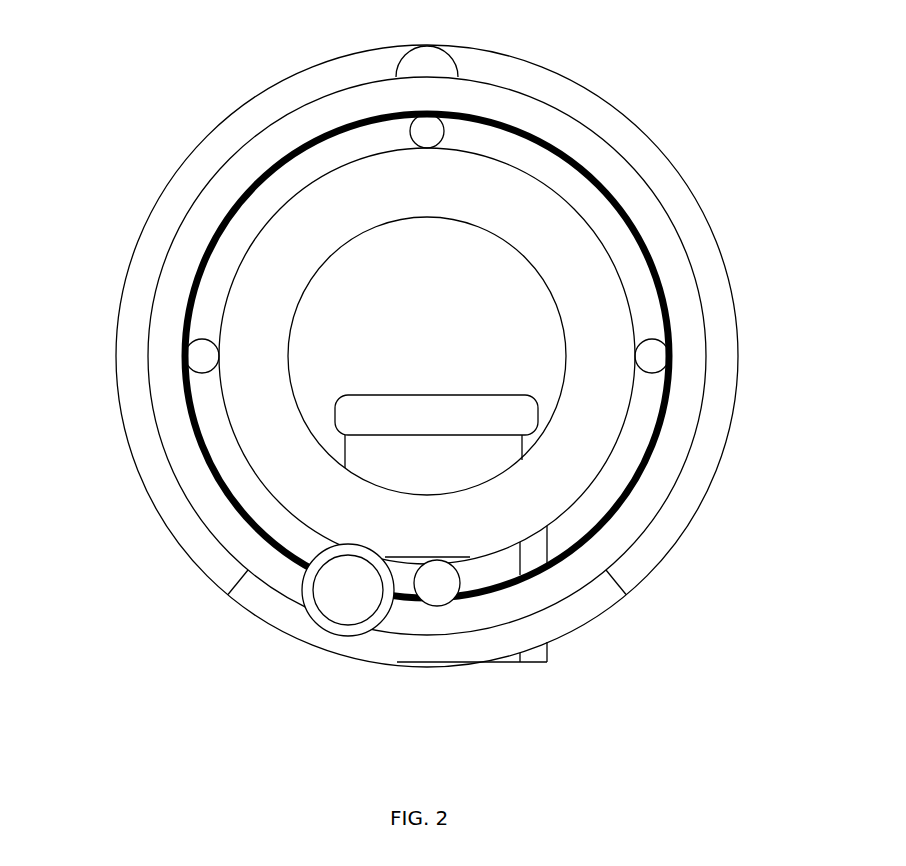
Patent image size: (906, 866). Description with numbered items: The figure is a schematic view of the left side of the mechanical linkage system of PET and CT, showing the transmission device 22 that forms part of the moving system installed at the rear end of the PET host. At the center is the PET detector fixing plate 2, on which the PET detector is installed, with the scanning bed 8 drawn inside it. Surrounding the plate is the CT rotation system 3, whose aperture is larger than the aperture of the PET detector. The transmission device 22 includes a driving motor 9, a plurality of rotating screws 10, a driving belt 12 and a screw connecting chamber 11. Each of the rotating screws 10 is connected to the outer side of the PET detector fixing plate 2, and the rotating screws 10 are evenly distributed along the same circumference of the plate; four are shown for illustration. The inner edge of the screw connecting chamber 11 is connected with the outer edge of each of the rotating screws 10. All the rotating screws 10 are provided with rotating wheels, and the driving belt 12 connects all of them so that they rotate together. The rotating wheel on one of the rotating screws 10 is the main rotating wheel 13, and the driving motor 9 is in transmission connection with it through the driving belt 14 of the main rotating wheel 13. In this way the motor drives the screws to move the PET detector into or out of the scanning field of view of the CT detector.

The PET detector fixing plate 2 is at (603, 375).
The CT rotation system 3 is at (130, 338).
The scanning bed 8 is at (498, 418).
The driving motor 9 is at (343, 595).
The rotating screws 10 is at (425, 132).
The screw connecting chamber 11 is at (170, 295).
The driving belt 12 is at (247, 183).
The main rotating wheel 13 is at (443, 587).
The driving belt of the main rotating wheel 14 is at (383, 593).
The transmission device 22 is at (328, 636).